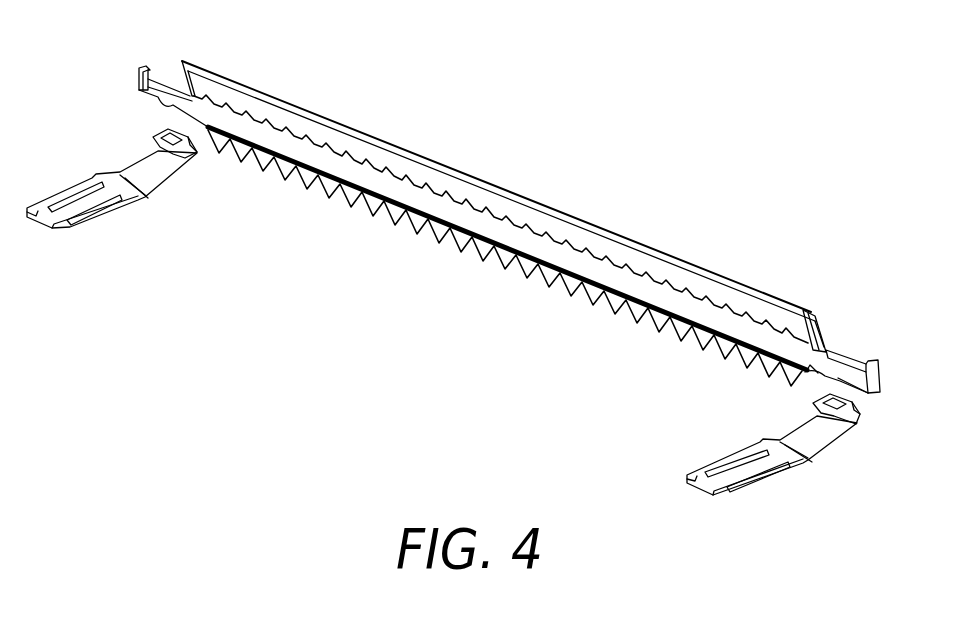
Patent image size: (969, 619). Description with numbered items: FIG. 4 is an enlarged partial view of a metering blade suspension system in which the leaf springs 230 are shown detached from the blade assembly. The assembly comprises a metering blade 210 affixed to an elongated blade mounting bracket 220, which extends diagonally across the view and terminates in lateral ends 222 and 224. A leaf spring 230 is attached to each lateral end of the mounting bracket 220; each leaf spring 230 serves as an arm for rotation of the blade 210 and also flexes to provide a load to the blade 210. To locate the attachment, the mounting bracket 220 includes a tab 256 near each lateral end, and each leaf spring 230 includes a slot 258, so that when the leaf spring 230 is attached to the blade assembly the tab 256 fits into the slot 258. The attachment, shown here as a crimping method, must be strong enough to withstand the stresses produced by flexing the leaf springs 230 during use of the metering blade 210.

The metering blade 210 is at (612, 233).
The elongated blade mounting bracket 220 is at (816, 341).
The lateral end 222 is at (145, 68).
The lateral end 224 is at (880, 380).
The leaf spring 230 is at (82, 182).
The tab 256 is at (164, 105).
The slot 258 is at (187, 160).